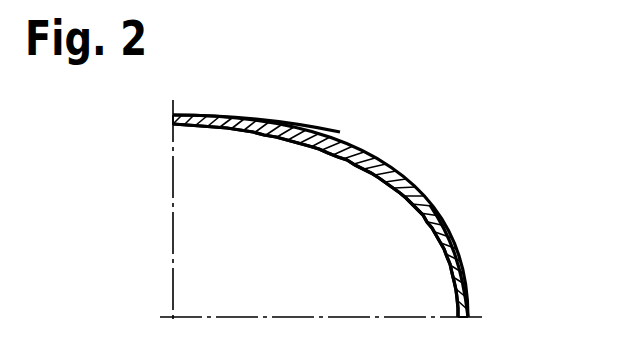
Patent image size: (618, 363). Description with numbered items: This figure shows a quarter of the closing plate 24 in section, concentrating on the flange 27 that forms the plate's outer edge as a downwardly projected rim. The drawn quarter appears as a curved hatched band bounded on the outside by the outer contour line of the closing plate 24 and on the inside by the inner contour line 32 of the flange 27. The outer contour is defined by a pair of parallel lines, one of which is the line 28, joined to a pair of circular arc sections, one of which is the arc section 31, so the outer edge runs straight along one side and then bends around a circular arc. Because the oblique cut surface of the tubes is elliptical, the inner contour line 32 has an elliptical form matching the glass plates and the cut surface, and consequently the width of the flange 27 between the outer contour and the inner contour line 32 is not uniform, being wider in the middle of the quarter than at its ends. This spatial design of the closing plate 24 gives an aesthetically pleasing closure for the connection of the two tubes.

The closing plate 24 is at (438, 215).
The flange 27 is at (387, 163).
The parallel line 28 is at (227, 115).
The circular arc section 31 is at (461, 259).
The inner contour line 32 is at (319, 150).